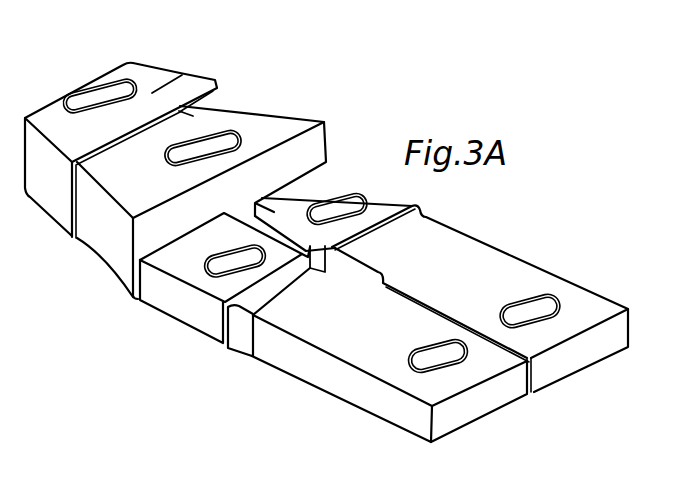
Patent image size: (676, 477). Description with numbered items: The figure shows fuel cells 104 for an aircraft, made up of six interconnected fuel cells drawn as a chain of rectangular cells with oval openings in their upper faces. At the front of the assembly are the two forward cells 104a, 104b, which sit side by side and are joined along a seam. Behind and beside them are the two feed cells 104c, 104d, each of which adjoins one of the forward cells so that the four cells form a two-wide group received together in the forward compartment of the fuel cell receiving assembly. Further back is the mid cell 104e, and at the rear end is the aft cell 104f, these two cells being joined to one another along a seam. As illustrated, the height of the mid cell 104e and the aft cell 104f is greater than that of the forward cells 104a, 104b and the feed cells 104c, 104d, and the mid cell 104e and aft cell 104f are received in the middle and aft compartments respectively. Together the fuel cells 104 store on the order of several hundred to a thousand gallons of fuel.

The fuel cells 104 is at (486, 417).
The forward cell 104a is at (345, 393).
The forward cell 104b is at (497, 264).
The feed cell 104c is at (185, 314).
The feed cell 104d is at (347, 185).
The mid cell 104e is at (253, 118).
The aft cell 104f is at (147, 79).